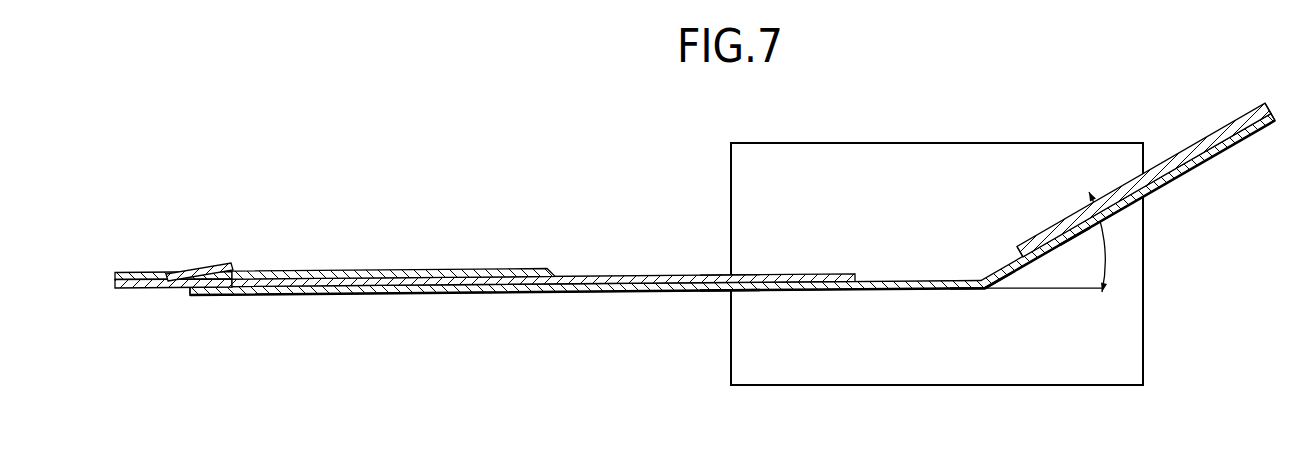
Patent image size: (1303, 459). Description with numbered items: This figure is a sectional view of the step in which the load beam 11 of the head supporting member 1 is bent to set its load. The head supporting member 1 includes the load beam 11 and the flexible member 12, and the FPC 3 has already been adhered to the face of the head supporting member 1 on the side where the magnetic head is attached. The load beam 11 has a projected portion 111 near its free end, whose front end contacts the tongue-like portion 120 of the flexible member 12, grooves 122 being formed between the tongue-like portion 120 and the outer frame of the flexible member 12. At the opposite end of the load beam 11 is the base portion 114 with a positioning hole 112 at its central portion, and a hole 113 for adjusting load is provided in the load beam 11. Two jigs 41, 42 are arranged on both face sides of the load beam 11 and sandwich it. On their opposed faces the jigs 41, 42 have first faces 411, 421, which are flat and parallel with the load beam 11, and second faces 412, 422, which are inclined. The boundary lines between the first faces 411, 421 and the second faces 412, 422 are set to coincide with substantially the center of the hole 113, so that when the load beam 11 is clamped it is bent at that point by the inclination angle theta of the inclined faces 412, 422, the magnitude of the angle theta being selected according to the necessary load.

The head supporting member 1 is at (696, 212).
The FPC 3 is at (442, 269).
The load beam 11 is at (730, 233).
The projected portion 111 is at (205, 295).
The positioning hole 112 is at (1147, 154).
The hole 113 is at (978, 290).
The base portion 114 is at (1253, 111).
The flexible member 12 is at (174, 279).
The tongue-like portion 120 is at (205, 272).
The grooves 122 is at (260, 279).
The jig 41 is at (920, 152).
The first face 411 is at (722, 293).
The second face 412 is at (1030, 257).
The jig 42 is at (877, 385).
The first face 421 is at (714, 275).
The second face 422 is at (1074, 238).
The inclination angle theta is at (1106, 252).